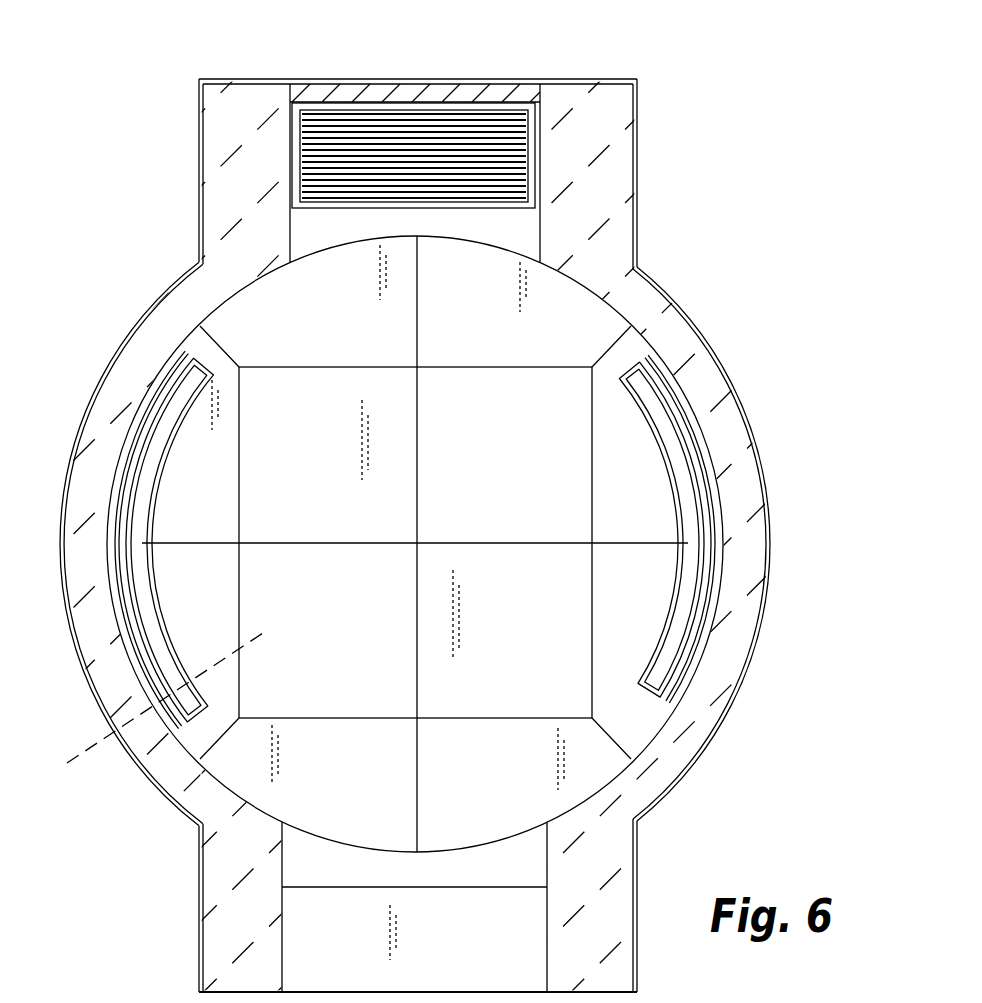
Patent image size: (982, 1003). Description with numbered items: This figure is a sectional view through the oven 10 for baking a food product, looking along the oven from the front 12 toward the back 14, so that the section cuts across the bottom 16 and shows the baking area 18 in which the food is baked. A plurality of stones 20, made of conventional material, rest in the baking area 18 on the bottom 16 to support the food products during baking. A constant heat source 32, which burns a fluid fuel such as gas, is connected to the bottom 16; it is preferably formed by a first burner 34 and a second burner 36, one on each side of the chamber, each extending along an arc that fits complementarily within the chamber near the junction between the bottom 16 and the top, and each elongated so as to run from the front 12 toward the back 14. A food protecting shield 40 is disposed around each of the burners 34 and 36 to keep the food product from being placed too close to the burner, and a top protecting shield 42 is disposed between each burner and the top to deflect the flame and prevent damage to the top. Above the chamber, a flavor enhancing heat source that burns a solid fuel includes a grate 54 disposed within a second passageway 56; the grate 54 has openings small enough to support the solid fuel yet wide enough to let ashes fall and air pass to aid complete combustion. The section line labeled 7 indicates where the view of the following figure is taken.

The oven 10 is at (626, 67).
The front 12 is at (195, 940).
The back 14 is at (641, 104).
The bottom 16 is at (637, 251).
The baking area 18 is at (328, 578).
The stones 20 is at (362, 327).
The constant heat source 32 is at (207, 371).
The first burner 34 is at (672, 622).
The second burner 36 is at (153, 625).
The food protecting shield 40 is at (168, 472).
The top protecting shield 42 is at (203, 338).
The grate 54 is at (300, 110).
The second passageway 56 is at (537, 237).
The section line 7- 7 is at (85, 725).